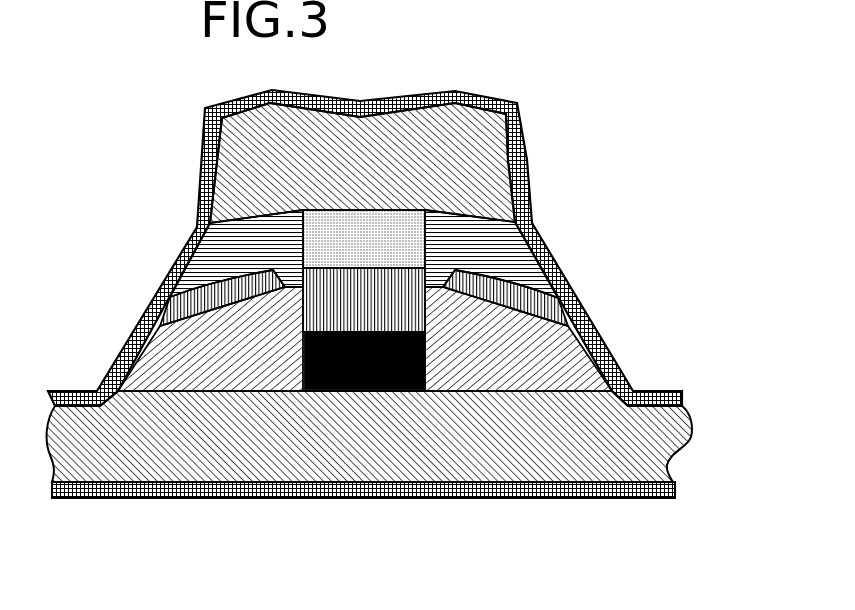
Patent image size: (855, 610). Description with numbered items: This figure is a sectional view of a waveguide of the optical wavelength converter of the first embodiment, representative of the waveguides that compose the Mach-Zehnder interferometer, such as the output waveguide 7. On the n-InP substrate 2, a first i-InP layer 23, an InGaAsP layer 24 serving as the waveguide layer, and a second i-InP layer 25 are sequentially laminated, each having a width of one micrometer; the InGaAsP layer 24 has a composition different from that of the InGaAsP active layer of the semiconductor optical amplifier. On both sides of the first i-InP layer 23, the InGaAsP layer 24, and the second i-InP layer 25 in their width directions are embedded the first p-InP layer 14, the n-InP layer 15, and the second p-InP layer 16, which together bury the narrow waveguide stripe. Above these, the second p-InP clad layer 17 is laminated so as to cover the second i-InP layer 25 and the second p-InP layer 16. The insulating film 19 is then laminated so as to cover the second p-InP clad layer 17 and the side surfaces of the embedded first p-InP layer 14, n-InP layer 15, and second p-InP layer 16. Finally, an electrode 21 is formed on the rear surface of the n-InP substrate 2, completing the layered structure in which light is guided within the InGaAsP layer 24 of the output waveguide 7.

The output waveguide 7 is at (374, 271).
The insulating film 19 is at (205, 140).
The second p-InP clad layer 17 is at (488, 170).
The second p-InP layer 16 is at (520, 267).
The n-InP layer 15 is at (555, 305).
The first p-InP layer 14 is at (585, 368).
The second i-InP layer 25 is at (320, 253).
The InGaAsP layer 24 is at (372, 315).
The first i-InP layer 23 is at (342, 378).
The n-InP substrate 2 is at (638, 447).
The electrode 21 is at (588, 498).